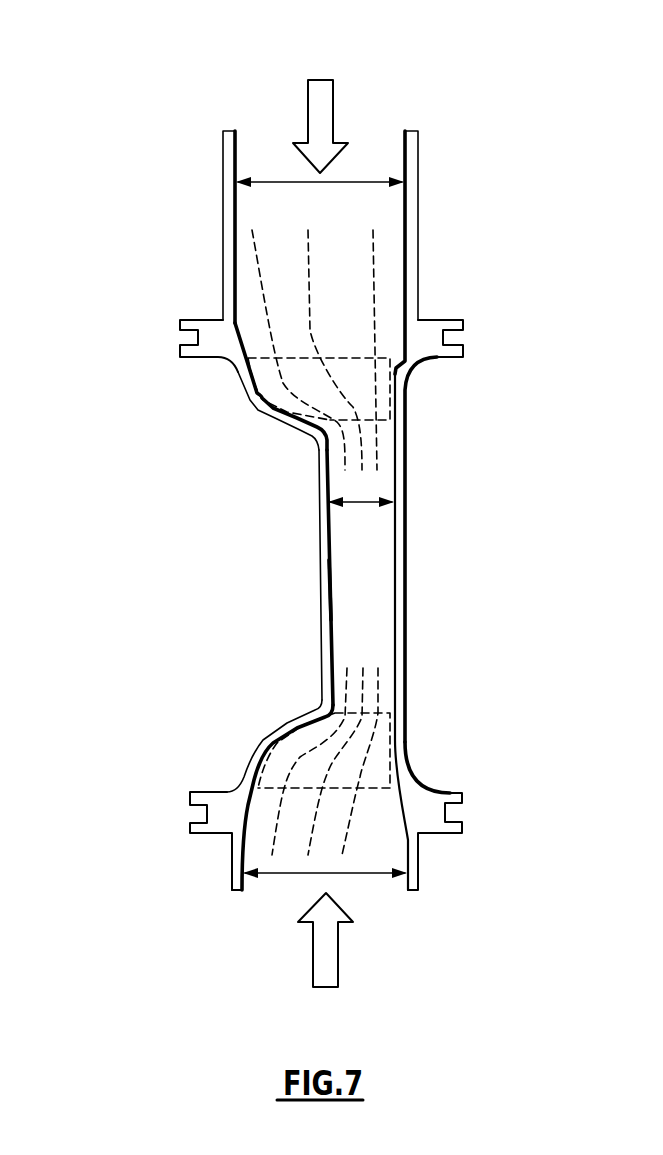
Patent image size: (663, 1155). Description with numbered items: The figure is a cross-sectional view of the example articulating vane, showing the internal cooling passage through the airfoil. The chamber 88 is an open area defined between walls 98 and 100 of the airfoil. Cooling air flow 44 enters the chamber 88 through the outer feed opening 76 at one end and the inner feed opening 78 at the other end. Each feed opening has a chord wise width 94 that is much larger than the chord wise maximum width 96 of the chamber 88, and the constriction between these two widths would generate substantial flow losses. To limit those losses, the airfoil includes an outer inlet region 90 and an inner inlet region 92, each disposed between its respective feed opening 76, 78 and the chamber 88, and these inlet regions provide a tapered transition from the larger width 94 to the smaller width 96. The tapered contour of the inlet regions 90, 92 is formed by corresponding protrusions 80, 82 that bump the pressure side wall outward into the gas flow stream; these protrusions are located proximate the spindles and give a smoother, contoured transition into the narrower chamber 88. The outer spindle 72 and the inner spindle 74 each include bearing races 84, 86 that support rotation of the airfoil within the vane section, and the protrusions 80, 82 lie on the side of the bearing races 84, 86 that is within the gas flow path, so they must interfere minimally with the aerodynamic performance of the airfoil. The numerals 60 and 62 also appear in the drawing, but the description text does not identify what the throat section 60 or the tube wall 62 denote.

The cooling air flow 44 is at (323, 79).
The throat section 60 is at (314, 577).
The tube wall 62 is at (415, 634).
The outer spindle 72 is at (412, 200).
The inner spindle 74 is at (423, 863).
The outer feed opening 76 is at (252, 126).
The inner feed opening 78 is at (353, 900).
The protrusion 80 is at (236, 413).
The protrusion 82 is at (242, 745).
The bearing race 84 is at (172, 335).
The bearing race 86 is at (180, 815).
The chamber 88 is at (363, 590).
The outer inlet region 90 is at (357, 373).
The inner inlet region 92 is at (355, 757).
The chord wise width 94 is at (362, 180).
The chord wise maximum width 96 is at (352, 506).
The wall 98 is at (323, 472).
The wall 100 is at (403, 450).